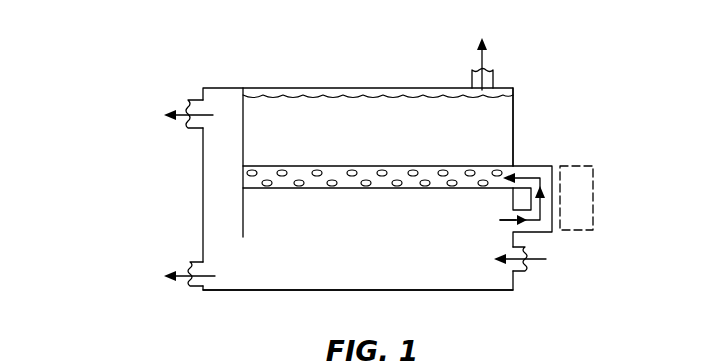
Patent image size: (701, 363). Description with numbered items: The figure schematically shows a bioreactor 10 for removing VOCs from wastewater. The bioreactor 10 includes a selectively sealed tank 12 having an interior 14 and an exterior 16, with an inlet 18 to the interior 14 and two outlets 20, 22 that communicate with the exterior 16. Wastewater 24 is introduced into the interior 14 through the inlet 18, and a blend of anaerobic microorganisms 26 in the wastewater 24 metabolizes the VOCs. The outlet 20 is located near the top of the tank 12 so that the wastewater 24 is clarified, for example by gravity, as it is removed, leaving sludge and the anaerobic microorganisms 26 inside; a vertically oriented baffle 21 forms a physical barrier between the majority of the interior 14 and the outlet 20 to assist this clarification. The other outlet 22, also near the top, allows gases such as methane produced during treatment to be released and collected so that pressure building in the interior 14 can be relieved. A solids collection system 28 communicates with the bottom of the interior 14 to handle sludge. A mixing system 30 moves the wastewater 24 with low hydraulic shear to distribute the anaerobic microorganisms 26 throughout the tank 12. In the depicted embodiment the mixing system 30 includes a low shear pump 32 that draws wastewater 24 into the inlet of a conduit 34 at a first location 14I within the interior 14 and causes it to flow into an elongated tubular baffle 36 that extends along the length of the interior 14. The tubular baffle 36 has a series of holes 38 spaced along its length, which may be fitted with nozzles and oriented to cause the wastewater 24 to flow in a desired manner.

The bioreactor 10 is at (116, 63).
The selectively sealed tank 12 is at (201, 175).
The interior 14 is at (313, 143).
The first location 14I is at (504, 221).
The exterior 16 is at (513, 115).
The inlet 18 is at (525, 270).
The outlet 20 is at (195, 100).
The vertically oriented baffle 21 is at (243, 222).
The outlet 22 is at (487, 78).
The wastewater 24 is at (290, 107).
The anaerobic microorganisms 26 is at (288, 286).
The solids collection system 28 is at (193, 287).
The mixing system 30 is at (640, 130).
The low shear pump 32 is at (577, 192).
The conduit 34 is at (540, 172).
The tubular baffle 36 is at (367, 174).
The holes 38 is at (366, 186).